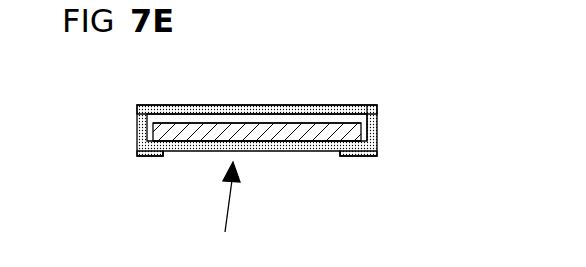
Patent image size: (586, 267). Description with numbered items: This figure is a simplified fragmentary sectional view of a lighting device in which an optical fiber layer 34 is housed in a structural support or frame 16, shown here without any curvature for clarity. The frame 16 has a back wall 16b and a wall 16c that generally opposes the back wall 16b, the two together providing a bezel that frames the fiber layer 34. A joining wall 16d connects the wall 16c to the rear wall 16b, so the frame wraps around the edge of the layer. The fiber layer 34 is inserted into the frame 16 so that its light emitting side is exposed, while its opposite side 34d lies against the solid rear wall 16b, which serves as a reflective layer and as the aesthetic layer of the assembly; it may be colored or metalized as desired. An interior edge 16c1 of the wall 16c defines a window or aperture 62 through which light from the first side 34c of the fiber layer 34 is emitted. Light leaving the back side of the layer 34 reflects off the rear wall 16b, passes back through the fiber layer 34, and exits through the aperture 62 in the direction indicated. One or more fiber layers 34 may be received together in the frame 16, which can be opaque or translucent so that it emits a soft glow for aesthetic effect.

The structural support or frame 16 is at (137, 118).
The back wall 16b is at (190, 106).
The wall 16c is at (152, 156).
The interior edge 16c1 is at (177, 156).
The joining wall 16d is at (377, 107).
The fiber layer 34 is at (289, 130).
The first side of the fiber layer 34c is at (267, 141).
The side of the fiber layer 34d is at (247, 123).
The window or aperture 62 is at (225, 211).